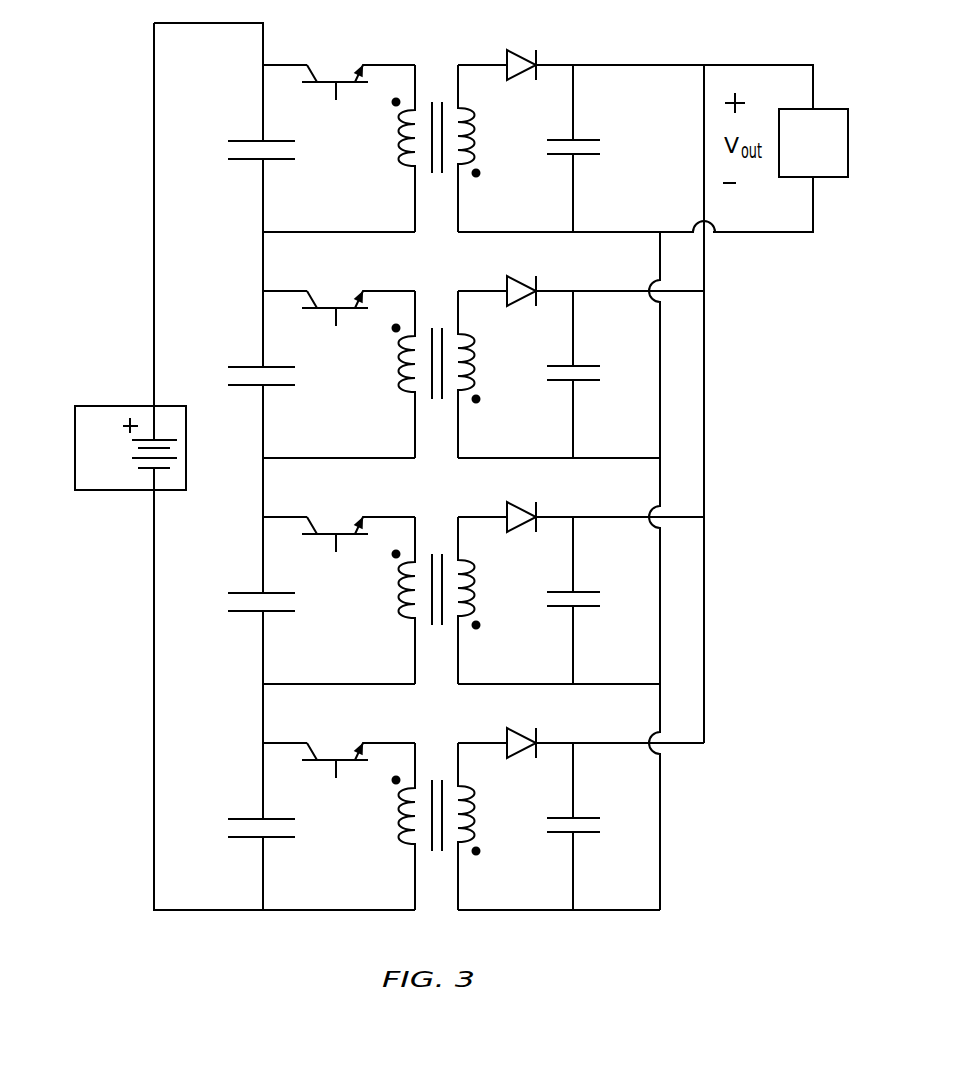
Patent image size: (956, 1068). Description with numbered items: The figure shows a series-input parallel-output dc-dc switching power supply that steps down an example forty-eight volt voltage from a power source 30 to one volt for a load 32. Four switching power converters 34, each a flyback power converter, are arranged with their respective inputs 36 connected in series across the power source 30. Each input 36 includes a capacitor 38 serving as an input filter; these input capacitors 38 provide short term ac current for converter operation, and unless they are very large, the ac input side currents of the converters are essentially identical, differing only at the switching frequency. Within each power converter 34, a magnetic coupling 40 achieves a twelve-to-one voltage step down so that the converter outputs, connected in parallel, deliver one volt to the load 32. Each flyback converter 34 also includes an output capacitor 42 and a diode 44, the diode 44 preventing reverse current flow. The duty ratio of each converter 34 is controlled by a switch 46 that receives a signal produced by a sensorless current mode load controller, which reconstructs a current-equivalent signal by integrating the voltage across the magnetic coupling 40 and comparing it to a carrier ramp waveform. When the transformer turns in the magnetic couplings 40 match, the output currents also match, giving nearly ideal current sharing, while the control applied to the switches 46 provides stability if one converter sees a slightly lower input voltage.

The power source 30 is at (106, 406).
The load 32 is at (831, 109).
The switching power converter 34 is at (511, 137).
The input 36 is at (263, 65).
The capacitor 38 is at (244, 161).
The magnetic coupling 40 is at (439, 96).
The output capacitor 42 is at (590, 139).
The diode 44 is at (517, 51).
The switch 46 is at (334, 79).